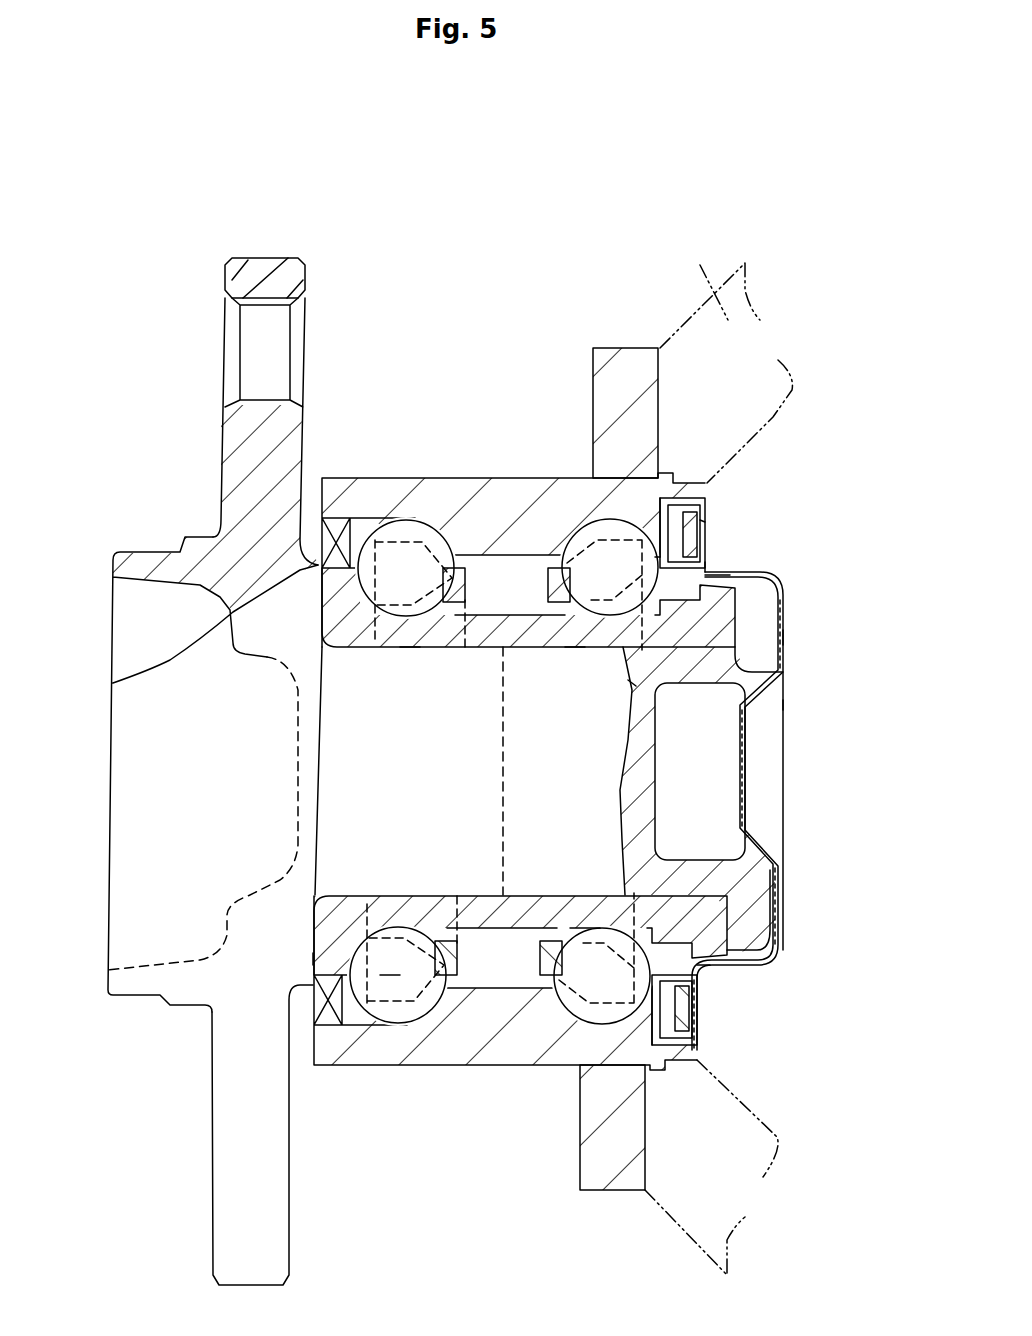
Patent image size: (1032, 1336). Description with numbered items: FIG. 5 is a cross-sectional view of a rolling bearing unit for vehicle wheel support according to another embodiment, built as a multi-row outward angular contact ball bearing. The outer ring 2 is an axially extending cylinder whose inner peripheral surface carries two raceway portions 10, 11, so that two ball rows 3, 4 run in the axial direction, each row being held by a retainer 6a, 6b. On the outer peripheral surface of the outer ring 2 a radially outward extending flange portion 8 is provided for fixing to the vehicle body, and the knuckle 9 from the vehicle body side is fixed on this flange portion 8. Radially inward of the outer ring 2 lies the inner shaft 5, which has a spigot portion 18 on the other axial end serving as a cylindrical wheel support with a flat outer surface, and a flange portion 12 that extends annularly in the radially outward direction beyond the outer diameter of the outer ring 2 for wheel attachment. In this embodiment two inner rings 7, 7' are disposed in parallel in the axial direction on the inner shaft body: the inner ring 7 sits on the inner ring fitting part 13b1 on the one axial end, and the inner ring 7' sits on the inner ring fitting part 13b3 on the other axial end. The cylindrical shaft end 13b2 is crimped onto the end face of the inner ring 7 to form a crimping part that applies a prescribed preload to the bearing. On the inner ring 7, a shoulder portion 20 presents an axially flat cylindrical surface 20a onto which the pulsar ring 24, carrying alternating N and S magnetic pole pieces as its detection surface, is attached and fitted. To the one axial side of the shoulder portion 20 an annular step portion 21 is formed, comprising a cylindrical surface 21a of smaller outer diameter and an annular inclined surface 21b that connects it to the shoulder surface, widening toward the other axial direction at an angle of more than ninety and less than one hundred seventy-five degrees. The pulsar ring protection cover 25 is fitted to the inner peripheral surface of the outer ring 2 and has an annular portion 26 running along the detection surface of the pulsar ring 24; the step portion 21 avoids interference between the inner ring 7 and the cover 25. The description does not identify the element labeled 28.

The outer ring 2 is at (503, 470).
The ball row 3 is at (398, 530).
The ball row 4 is at (600, 530).
The inner shaft 5 is at (530, 910).
The retainer 6a is at (395, 990).
The retainer 6b is at (578, 945).
The inner ring 7 is at (604, 771).
The inner ring 7' is at (217, 1020).
The flange portion 8 is at (625, 372).
The knuckle 9 is at (698, 262).
The raceway portion 10 is at (445, 555).
The raceway portion 11 is at (630, 520).
The flange portion 12 is at (285, 268).
The inner ring fitting part 13b1 is at (575, 650).
The shaft end 13b2 is at (790, 704).
The inner ring fitting part 13b3 is at (412, 655).
The spigot portion 18 is at (118, 563).
The shoulder portion 20 is at (700, 992).
The cylindrical surface 20a is at (707, 535).
The step portion 21 is at (845, 514).
The cylindrical surface 21a is at (705, 572).
The inclined surface 21b is at (707, 556).
The pulsar ring 24 is at (710, 520).
The pulsar ring protection cover 25 is at (800, 637).
The annular portion 26 is at (705, 972).
The caulked portion 28 is at (633, 683).